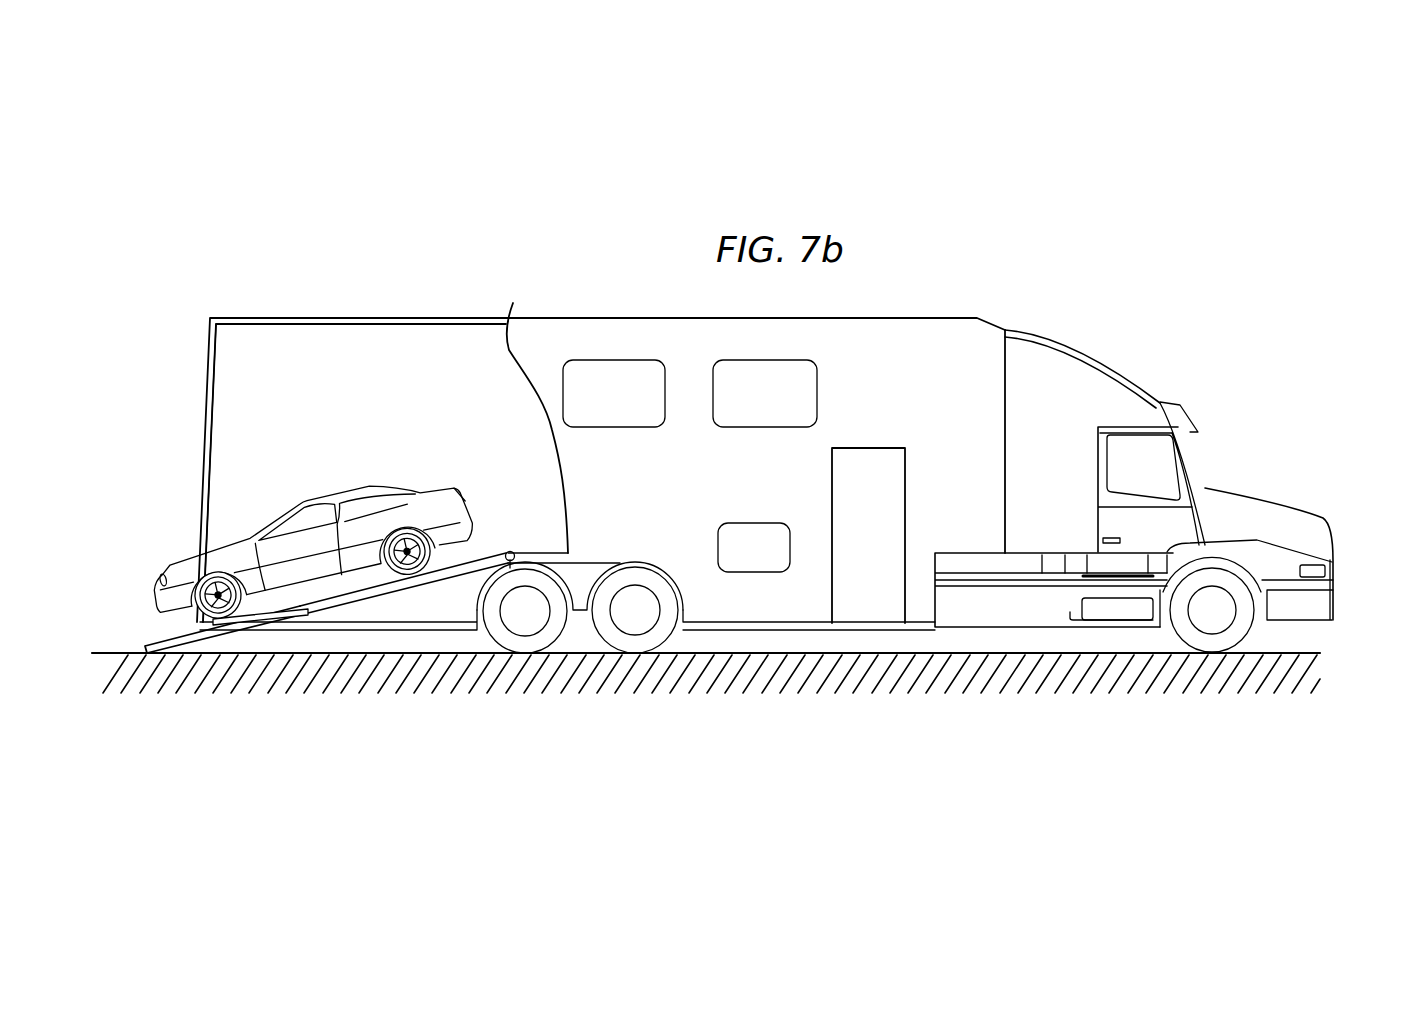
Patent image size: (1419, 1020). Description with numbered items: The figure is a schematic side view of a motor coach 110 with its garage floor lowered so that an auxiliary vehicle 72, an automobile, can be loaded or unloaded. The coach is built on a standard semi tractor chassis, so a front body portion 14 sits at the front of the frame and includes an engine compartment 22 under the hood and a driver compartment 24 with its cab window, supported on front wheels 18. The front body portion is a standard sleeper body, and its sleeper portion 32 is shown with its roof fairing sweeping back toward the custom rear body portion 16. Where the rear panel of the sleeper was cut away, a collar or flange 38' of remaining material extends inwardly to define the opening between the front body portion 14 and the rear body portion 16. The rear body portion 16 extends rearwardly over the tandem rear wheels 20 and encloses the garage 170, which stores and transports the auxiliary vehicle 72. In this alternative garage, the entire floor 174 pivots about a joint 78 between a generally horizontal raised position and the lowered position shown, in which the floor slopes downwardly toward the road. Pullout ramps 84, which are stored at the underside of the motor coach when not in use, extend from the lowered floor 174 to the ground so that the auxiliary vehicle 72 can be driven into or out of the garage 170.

The rear body portion 16 is at (437, 310).
The garage 170 is at (326, 405).
The flange 38' is at (931, 532).
The rear wheels 20 is at (532, 653).
The joint 78 is at (508, 618).
The floor 174 is at (362, 601).
The pullout ramps 84 is at (223, 636).
The auxiliary vehicle 72 is at (266, 513).
The motor coach 110 is at (1277, 378).
The sleeper portion 32 is at (1045, 385).
The front body portion 14 is at (1137, 416).
The driver compartment 24 is at (1165, 475).
The engine compartment 22 is at (1305, 530).
The front wheels 18 is at (1212, 643).